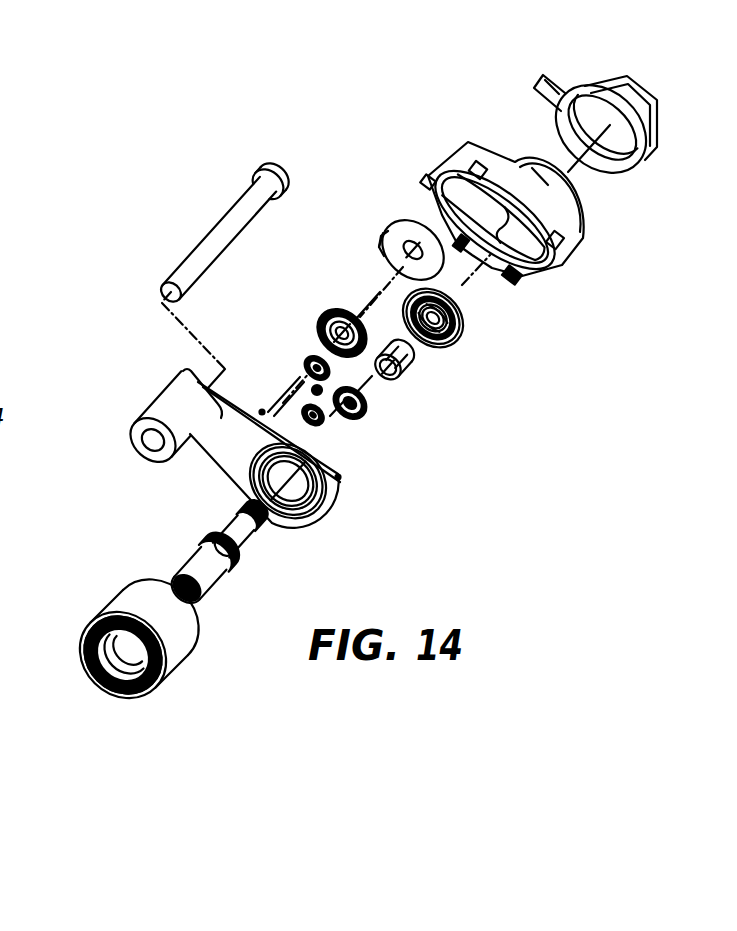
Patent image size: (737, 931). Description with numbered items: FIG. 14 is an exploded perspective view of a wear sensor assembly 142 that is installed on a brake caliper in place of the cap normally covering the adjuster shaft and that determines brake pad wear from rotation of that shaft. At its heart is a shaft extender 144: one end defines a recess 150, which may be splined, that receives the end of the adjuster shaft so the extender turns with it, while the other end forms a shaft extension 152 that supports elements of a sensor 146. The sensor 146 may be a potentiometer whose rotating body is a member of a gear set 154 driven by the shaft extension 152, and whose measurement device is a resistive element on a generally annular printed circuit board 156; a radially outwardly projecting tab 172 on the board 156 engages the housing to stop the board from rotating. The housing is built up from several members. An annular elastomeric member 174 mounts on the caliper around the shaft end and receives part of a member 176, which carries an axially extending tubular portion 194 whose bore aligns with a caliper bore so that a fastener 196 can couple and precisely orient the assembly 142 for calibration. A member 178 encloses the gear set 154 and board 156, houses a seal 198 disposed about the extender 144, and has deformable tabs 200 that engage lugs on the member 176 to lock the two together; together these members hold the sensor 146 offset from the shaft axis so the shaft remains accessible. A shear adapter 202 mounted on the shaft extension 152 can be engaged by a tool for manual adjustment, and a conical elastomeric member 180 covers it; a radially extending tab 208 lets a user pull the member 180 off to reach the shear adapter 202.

The wear sensor assembly 142 is at (524, 500).
The shaft extender 144 is at (243, 543).
The sensor 146 is at (478, 396).
The recess 150 is at (199, 607).
The shaft extension 152 is at (250, 530).
The gear set 154 is at (337, 286).
The printed circuit board 156 is at (393, 228).
The tab 172 is at (379, 253).
The member 174 is at (118, 597).
The member 176 is at (222, 440).
The member 178 is at (562, 233).
The member 180 is at (658, 152).
The tubular portion 194 is at (166, 398).
The fastener 196 is at (203, 240).
The seal 198 is at (466, 332).
The deformable tabs 200 is at (512, 284).
The shear adapter 202 is at (403, 381).
The tab 208 is at (534, 94).